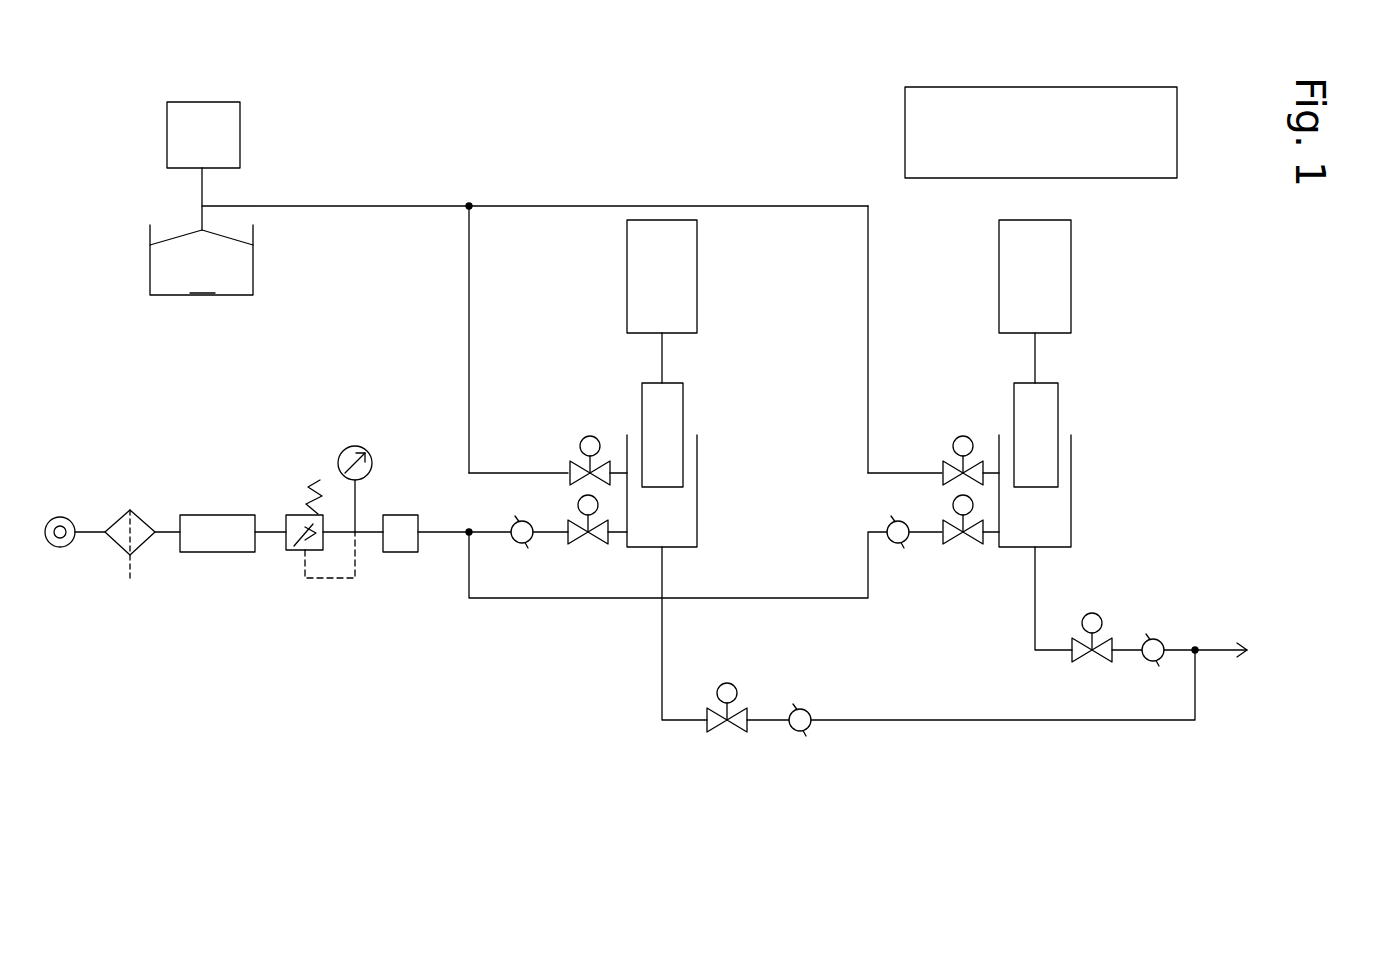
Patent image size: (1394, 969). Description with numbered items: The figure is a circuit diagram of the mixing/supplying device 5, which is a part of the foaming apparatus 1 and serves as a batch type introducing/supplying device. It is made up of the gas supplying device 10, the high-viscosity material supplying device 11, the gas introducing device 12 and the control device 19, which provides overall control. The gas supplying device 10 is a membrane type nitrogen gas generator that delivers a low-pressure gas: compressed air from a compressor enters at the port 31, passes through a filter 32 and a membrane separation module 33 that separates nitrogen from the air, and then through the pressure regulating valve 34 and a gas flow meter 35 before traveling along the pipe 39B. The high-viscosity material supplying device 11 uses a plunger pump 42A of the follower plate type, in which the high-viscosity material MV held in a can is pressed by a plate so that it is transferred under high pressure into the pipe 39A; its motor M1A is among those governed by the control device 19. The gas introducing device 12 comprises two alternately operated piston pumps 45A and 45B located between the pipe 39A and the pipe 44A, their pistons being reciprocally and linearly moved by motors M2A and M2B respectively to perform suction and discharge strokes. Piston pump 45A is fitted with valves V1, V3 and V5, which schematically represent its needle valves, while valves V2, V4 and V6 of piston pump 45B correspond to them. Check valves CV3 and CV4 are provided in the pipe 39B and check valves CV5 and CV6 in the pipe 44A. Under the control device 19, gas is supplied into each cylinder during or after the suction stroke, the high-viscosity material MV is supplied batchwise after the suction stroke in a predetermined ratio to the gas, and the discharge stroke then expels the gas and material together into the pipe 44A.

The foaming apparatus 1 is at (704, 62).
The mixing/supplying device 5 is at (686, 29).
The gas supplying device 10 is at (297, 410).
The high-viscosity material supplying device 11 is at (305, 96).
The gas introducing device 12 is at (948, 268).
The control device 19 is at (905, 138).
The port 31 is at (60, 517).
The filter 32 is at (143, 512).
The membrane separation module 33 is at (217, 520).
The pressure regulating valve 34 is at (297, 514).
The gas flow meter 35 is at (400, 515).
The pipe 39A is at (405, 206).
The pipe 39B is at (445, 540).
The plunger pump 42A is at (253, 272).
The pipe 44A is at (1215, 643).
The piston pump 45A is at (697, 450).
The piston pump 45B is at (1072, 460).
The motor M1A is at (240, 130).
The motor M2A is at (633, 278).
The motor M2B is at (1060, 312).
The high-viscosity material MV is at (200, 278).
The valve V1 is at (590, 435).
The valve V2 is at (963, 437).
The valve V3 is at (585, 545).
The valve V4 is at (955, 545).
The valve V5 is at (727, 733).
The valve V6 is at (1085, 662).
The check valve CV3 is at (522, 545).
The check valve CV4 is at (895, 545).
The check valve CV5 is at (805, 733).
The check valve CV6 is at (1150, 662).